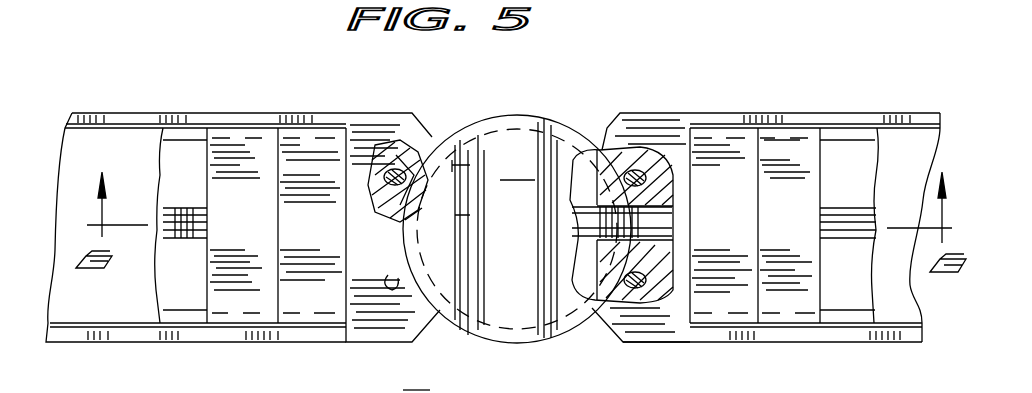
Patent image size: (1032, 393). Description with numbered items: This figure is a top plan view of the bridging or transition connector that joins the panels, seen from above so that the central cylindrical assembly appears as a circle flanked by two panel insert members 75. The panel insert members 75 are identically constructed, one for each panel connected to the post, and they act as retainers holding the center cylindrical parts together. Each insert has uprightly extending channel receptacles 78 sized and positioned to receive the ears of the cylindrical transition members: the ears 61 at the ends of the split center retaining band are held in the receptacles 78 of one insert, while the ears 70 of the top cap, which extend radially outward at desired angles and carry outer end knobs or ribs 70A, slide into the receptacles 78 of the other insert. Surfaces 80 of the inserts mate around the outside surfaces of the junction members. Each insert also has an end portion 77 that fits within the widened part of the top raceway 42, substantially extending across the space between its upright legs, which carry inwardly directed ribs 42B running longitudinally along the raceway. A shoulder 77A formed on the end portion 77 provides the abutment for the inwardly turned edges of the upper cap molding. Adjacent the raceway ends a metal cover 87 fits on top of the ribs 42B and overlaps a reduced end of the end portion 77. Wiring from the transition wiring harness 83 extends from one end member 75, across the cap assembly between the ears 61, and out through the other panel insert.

The top raceway 42 is at (795, 120).
The inwardly directed ribs 42B is at (185, 135).
The ears 61 is at (615, 175).
The ears 70 is at (406, 208).
The outer end knobs or ribs 70A is at (343, 205).
The panel insert members 75 is at (372, 125).
The end portions 77 is at (247, 155).
The shoulder 77A is at (278, 225).
The channel receptacles 78 is at (420, 145).
The surfaces 80 is at (427, 177).
The transition wiring harness 83 is at (190, 240).
The metal cover 87 is at (112, 145).